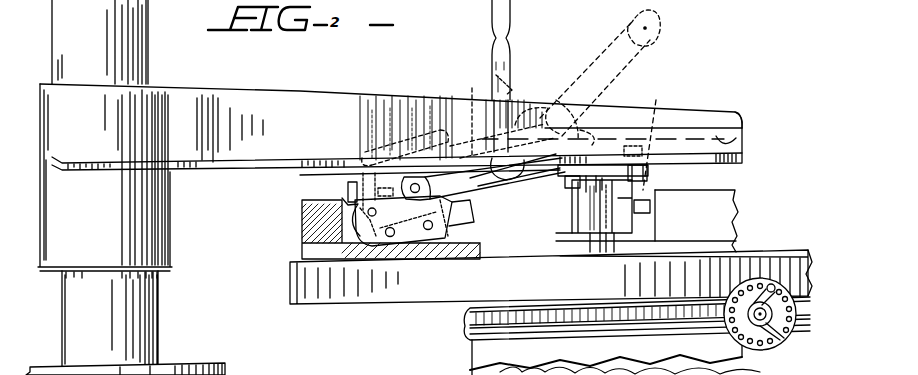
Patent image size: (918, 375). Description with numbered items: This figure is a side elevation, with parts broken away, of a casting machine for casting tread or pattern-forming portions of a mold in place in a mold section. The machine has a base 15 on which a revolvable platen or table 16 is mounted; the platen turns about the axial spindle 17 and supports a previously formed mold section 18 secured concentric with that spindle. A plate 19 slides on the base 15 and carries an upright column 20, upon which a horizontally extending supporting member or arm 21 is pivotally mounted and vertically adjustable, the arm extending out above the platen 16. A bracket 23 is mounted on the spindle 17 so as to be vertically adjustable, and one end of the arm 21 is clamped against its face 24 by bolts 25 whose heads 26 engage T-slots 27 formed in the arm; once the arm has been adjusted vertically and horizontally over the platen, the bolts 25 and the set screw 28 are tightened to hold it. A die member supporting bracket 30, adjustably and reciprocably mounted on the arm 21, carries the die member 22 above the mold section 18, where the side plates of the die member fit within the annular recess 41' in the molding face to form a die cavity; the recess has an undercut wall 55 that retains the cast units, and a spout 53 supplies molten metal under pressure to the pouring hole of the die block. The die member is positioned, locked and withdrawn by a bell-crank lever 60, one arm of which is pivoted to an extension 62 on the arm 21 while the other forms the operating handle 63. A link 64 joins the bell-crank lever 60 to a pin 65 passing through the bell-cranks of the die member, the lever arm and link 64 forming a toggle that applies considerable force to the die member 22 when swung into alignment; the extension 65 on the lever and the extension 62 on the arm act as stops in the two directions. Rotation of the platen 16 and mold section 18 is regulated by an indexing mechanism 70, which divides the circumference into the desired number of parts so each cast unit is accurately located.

The base 15 is at (580, 336).
The revolvable platen or table 16 is at (290, 289).
The axial spindle 17 is at (618, 247).
The mold section 18 is at (300, 215).
The plate 19 is at (176, 367).
The upright column 20 is at (156, 302).
The supporting member or arm 21 is at (266, 80).
The die member 22 is at (456, 210).
The bracket 23 is at (572, 216).
The face 24 is at (650, 177).
The bolts 25 is at (650, 190).
The heads 26 is at (645, 139).
The T-slots 27 is at (743, 140).
The set screw 28 is at (650, 207).
The die member supporting bracket 30 is at (372, 175).
The annular recess 41' is at (329, 217).
The spout 53 is at (344, 187).
The undercut wall 55 is at (472, 211).
The bell-crank lever 60 is at (569, 176).
The extension 62 is at (578, 106).
The operating handle 63 is at (512, 42).
The link 64 is at (486, 176).
The pin / extension 65 is at (476, 86).
The indexing mechanism 70 is at (786, 337).